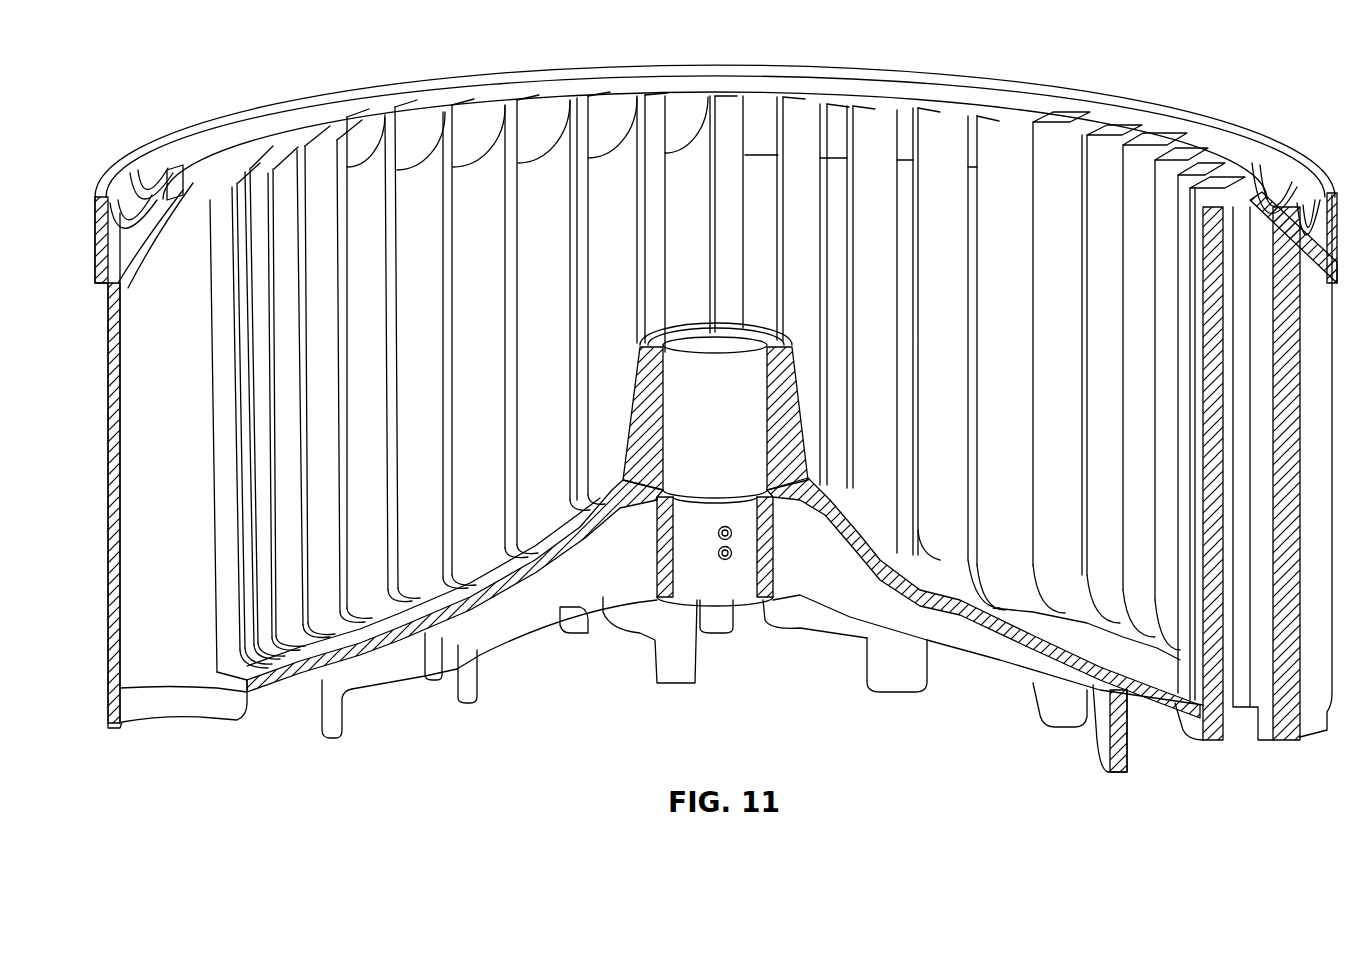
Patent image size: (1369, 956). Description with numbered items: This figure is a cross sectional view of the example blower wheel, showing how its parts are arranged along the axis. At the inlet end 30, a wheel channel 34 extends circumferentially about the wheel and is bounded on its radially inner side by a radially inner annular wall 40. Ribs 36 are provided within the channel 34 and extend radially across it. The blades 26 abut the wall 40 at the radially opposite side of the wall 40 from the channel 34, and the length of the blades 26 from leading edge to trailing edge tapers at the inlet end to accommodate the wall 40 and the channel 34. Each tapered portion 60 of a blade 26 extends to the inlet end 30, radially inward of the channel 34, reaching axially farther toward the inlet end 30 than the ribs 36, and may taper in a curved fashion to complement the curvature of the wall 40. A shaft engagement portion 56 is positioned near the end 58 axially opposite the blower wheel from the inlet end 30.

The blades 26 is at (145, 500).
The inlet end 30 is at (1180, 155).
The wheel channel 34 is at (188, 164).
The ribs 36 is at (140, 192).
The radially inner annular wall 40 is at (103, 217).
The shaft engagement portion 56 is at (990, 645).
The end 58 is at (1305, 771).
The tapered portion 60 is at (224, 210).